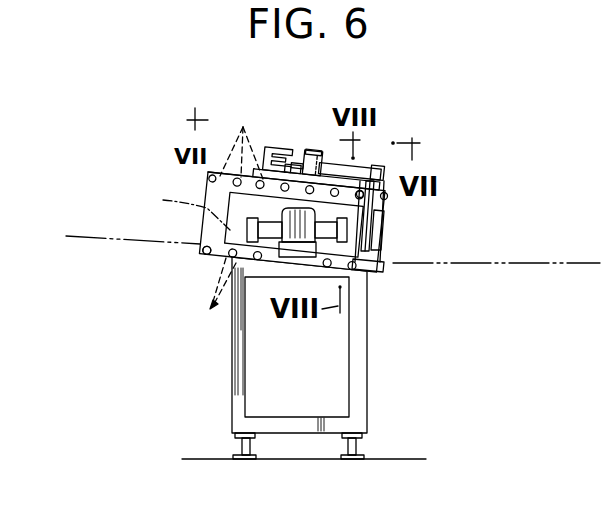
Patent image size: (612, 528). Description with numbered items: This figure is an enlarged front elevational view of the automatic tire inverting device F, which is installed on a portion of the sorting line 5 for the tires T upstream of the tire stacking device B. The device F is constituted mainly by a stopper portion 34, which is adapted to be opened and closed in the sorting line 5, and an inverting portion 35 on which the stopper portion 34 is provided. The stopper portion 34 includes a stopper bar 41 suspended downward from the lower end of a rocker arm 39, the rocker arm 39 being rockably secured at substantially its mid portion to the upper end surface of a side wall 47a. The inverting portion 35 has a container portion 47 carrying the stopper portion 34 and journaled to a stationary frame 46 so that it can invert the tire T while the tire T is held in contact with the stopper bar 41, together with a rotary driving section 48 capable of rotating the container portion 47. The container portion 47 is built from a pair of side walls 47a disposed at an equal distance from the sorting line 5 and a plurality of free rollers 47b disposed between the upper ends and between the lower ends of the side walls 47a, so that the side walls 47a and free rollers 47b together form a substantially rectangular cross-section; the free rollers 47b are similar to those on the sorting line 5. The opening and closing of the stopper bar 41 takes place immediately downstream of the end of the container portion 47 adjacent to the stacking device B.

The sorting line 5 is at (68, 236).
The stopper portion 34 is at (377, 157).
The inverting portion 35 is at (196, 193).
The rocker arm 39 is at (327, 160).
The stopper bar 41 is at (387, 228).
The stationary frame 46 is at (357, 376).
The container portion 47 is at (195, 222).
The side wall 47a is at (218, 252).
The free roller 47b is at (211, 211).
The rotary driving section 48 is at (272, 232).
The tire T is at (186, 208).
The automatic tire inverting device F is at (447, 159).
The tire stacking device B is at (504, 262).